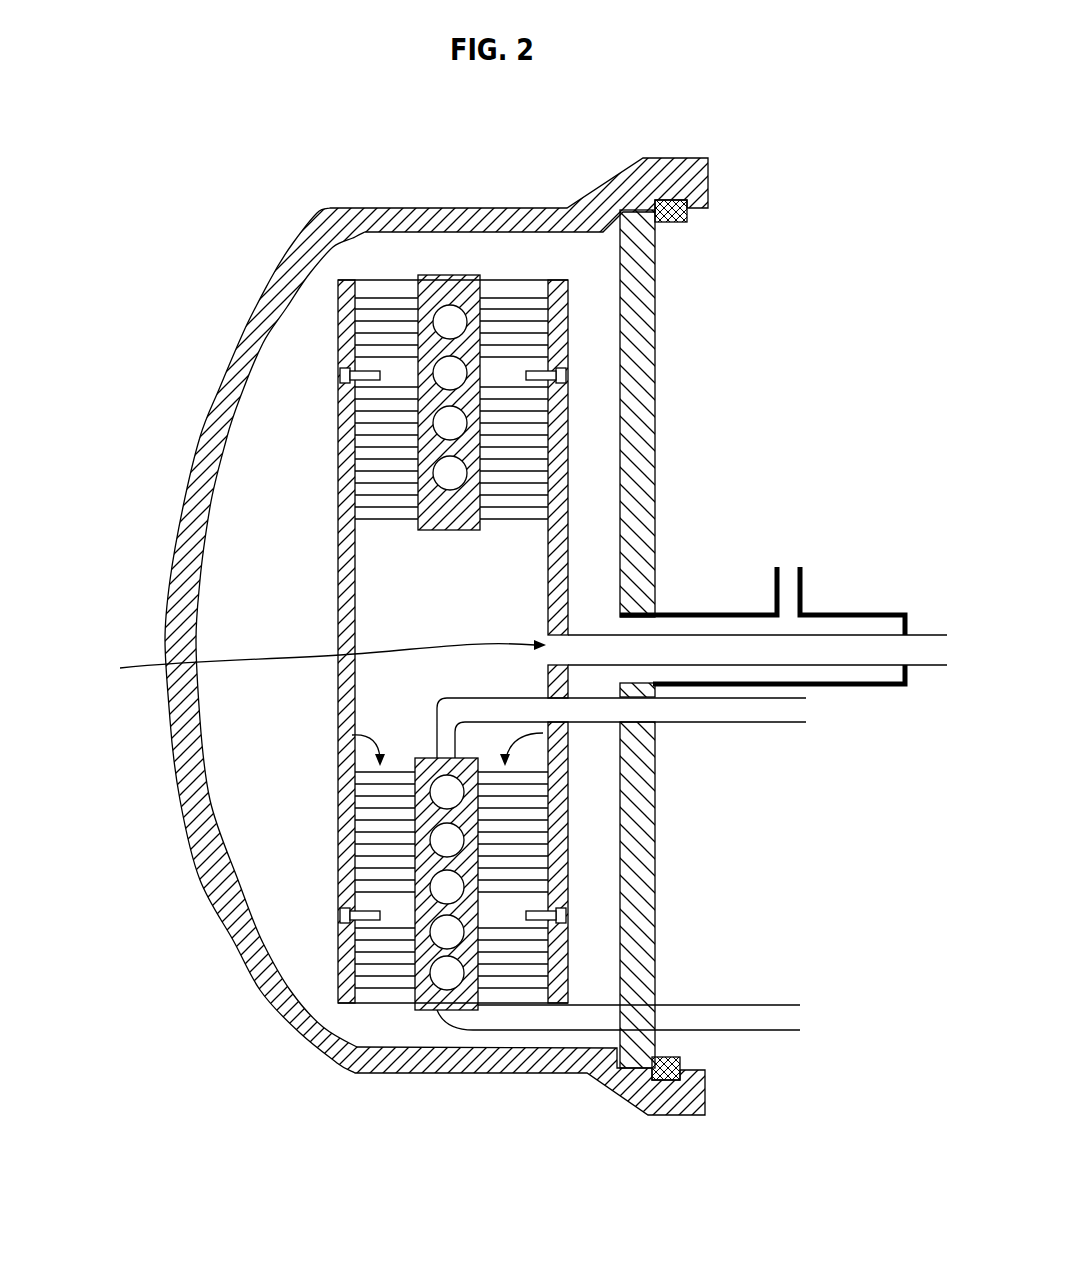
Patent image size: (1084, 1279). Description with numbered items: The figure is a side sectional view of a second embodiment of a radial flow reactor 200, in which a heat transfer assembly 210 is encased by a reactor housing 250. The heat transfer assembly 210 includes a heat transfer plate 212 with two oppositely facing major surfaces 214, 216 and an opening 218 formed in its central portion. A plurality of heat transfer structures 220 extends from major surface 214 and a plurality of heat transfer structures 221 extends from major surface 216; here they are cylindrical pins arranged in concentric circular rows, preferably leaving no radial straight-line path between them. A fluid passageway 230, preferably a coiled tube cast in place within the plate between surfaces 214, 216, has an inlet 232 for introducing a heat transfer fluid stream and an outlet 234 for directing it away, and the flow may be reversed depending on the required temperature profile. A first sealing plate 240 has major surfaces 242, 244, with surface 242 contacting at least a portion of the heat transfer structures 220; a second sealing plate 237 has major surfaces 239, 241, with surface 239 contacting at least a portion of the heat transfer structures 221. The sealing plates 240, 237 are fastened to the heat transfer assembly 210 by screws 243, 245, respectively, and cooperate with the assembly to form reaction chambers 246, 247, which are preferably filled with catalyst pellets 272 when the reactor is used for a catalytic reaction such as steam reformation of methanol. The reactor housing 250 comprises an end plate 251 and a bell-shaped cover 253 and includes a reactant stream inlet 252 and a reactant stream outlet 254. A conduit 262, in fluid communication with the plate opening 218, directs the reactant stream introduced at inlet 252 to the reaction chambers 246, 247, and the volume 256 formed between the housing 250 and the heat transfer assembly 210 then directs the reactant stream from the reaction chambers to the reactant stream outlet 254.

The radial flow reactor 200 is at (228, 208).
The heat transfer assembly 210 is at (480, 262).
The volume 256 is at (548, 256).
The end plate 251 is at (650, 246).
The fluid passageway 230 is at (455, 322).
The screws 243 is at (348, 376).
The screws 245 is at (565, 373).
The catalyst pellets 272 is at (358, 372).
The major surface 214 is at (357, 412).
The heat transfer plate 212 is at (482, 400).
The major surface 216 is at (540, 455).
The heat transfer structures 220 is at (350, 505).
The heat transfer structures 221 is at (540, 512).
The major surface 242 is at (565, 560).
The first sealing plate 240 is at (338, 542).
The reactant stream outlet 254 is at (790, 567).
The reactant stream inlet 252 is at (945, 648).
The major surface 244 is at (338, 588).
The opening 218 is at (311, 662).
The major surface 239 is at (545, 678).
The reaction chamber 246 is at (350, 735).
The reaction chamber 247 is at (565, 736).
The second sealing plate 237 is at (565, 768).
The major surface 241 is at (565, 805).
The conduit 262 is at (868, 656).
The inlet 232 is at (793, 711).
The bell-shaped cover 253 is at (200, 822).
The outlet 234 is at (832, 993).
The reactor housing 250 is at (592, 1090).